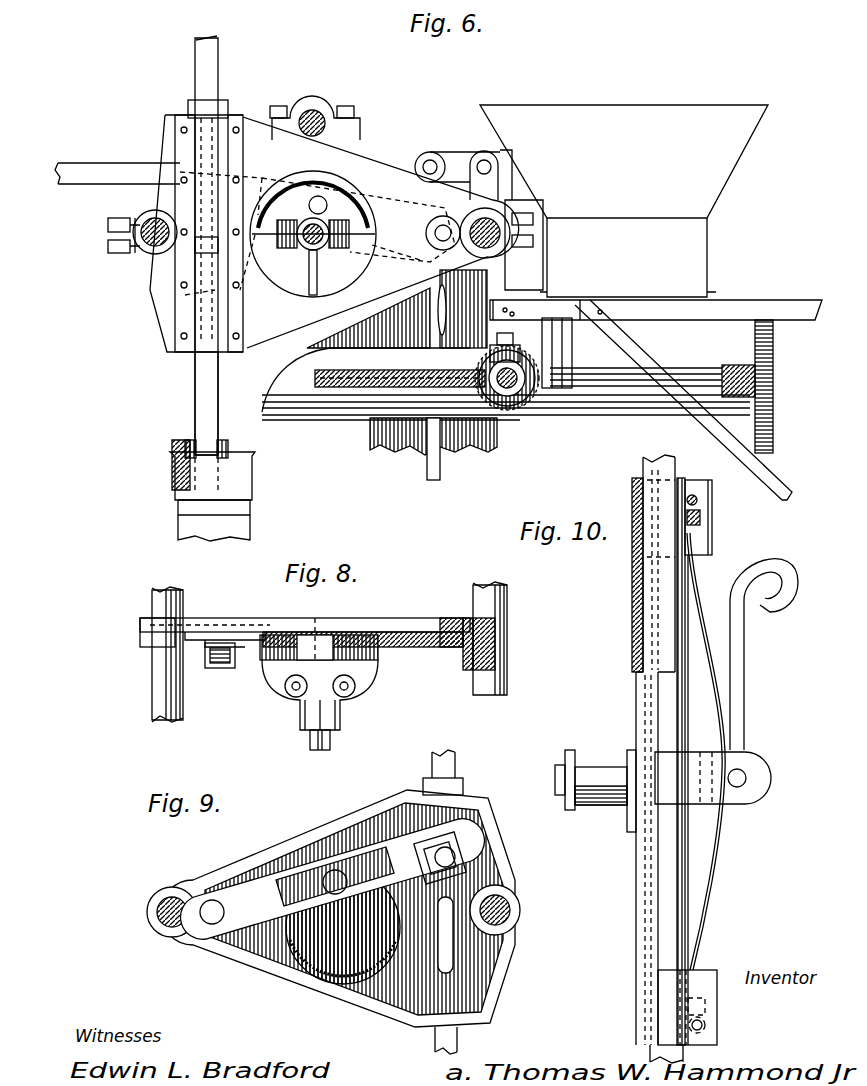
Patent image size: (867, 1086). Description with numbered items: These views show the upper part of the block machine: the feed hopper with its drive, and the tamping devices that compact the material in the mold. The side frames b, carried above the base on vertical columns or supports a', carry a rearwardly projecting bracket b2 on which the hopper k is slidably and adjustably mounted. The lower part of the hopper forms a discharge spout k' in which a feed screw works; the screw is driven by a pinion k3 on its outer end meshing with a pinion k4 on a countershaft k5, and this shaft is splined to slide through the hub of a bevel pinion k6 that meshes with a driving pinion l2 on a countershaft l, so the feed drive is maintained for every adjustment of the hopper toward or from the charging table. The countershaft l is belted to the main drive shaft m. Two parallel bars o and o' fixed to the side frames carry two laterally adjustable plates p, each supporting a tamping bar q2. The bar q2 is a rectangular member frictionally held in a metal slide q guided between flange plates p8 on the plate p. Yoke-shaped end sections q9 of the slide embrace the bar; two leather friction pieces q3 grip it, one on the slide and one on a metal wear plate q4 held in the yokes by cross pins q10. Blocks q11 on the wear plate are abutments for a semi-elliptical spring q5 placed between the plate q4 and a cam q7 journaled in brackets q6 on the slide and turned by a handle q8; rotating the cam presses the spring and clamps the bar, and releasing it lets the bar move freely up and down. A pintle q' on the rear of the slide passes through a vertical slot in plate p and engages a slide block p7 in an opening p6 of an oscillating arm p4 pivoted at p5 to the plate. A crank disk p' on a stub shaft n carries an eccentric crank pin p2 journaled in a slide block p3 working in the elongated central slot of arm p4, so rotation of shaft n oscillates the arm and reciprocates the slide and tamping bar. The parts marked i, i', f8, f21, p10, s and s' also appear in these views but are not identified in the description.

In FIG. 6, the metal slide q is at (212, 245).
In FIG. 8, the metal slide q is at (305, 615).
In FIG. 10, the metal slide q is at (636, 563).
In FIG. 6, the tamping bar q2 is at (197, 390).
In FIG. 9, the tamping bar q2 is at (455, 765).
In FIG. 10, the tamping bar q2 is at (645, 942).
In FIG. 9, the pintle q' is at (476, 814).
In FIG. 10, the pintle q' is at (595, 793).
In FIG. 10, the leather friction pieces q3 is at (688, 482).
In FIG. 10, the metal wear plate q4 is at (712, 492).
In FIG. 8, the semi-elliptical spring q5 is at (222, 660).
In FIG. 10, the semi-elliptical spring q5 is at (698, 586).
In FIG. 10, the brackets q6 is at (722, 804).
In FIG. 8, the cam q7 is at (232, 670).
In FIG. 10, the cam q7 is at (771, 770).
In FIG. 8, the handle q8 is at (236, 660).
In FIG. 10, the handle q8 is at (745, 730).
In FIG. 10, the yoke-shaped end sections q9 is at (712, 533).
In FIG. 10, the cross pins q10 is at (699, 503).
In FIG. 10, the blocks q11 is at (702, 517).
In FIG. 6, the plate p is at (381, 232).
In FIG. 8, the plate p is at (408, 661).
In FIG. 9, the plate p is at (338, 912).
In FIG. 6, the crank disk p' is at (325, 234).
In FIG. 8, the crank disk p' is at (320, 625).
In FIG. 9, the crank disk p' is at (343, 927).
In FIG. 6, the crank pin p2 is at (320, 198).
In FIG. 8, the crank pin p2 is at (324, 618).
In FIG. 9, the crank pin p2 is at (337, 896).
In FIG. 6, the slide block p3 is at (352, 208).
In FIG. 9, the slide block p3 is at (350, 862).
In FIG. 6, the oscillating arm or rock-lever p4 is at (350, 234).
In FIG. 8, the oscillating arm or rock-lever p4 is at (396, 630).
In FIG. 9, the oscillating arm or rock-lever p4 is at (333, 879).
In FIG. 8, the pivot p5 is at (452, 618).
In FIG. 9, the pivot p5 is at (213, 926).
In FIG. 9, the opening p6 is at (420, 840).
In FIG. 9, the slide block p7 is at (455, 852).
In FIG. 6, the flange plates p8 is at (184, 116).
In FIG. 8, the flange plates p8 is at (190, 635).
In FIG. 6, the slot p10 is at (185, 296).
In FIG. 9, the slot p10 is at (444, 976).
In FIG. 6, the parallel bar o is at (142, 248).
In FIG. 8, the parallel bar o is at (153, 654).
In FIG. 9, the parallel bar o is at (504, 910).
In FIG. 8, the parallel bar o' is at (503, 638).
In FIG. 9, the parallel bar o' is at (172, 928).
In FIG. 6, the stub shaft n is at (305, 246).
In FIG. 8, the stub shaft n is at (332, 742).
In FIG. 6, the main drive shaft m is at (314, 120).
In FIG. 6, the rod i is at (283, 166).
In FIG. 6, the lever i' is at (433, 453).
In FIG. 6, the hopper k is at (624, 201).
In FIG. 6, the discharge spout k' is at (506, 380).
In FIG. 6, the pinion k3 is at (775, 342).
In FIG. 6, the pinion k4 is at (776, 380).
In FIG. 6, the countershaft k5 is at (686, 370).
In FIG. 6, the bevel pinion k6 is at (515, 352).
In FIG. 6, the countershaft l is at (510, 385).
In FIG. 6, the driving pinion l2 is at (485, 370).
In FIG. 6, the side frames b is at (497, 413).
In FIG. 6, the rearwardly projecting bracket b2 is at (755, 302).
In FIG. 6, the vertical columns or supports a' is at (501, 245).
In FIG. 6, the packing f8 is at (229, 440).
In FIG. 6, the liner f21 is at (174, 445).
In FIG. 6, the socket s is at (224, 520).
In FIG. 6, the socket collar s' is at (223, 477).